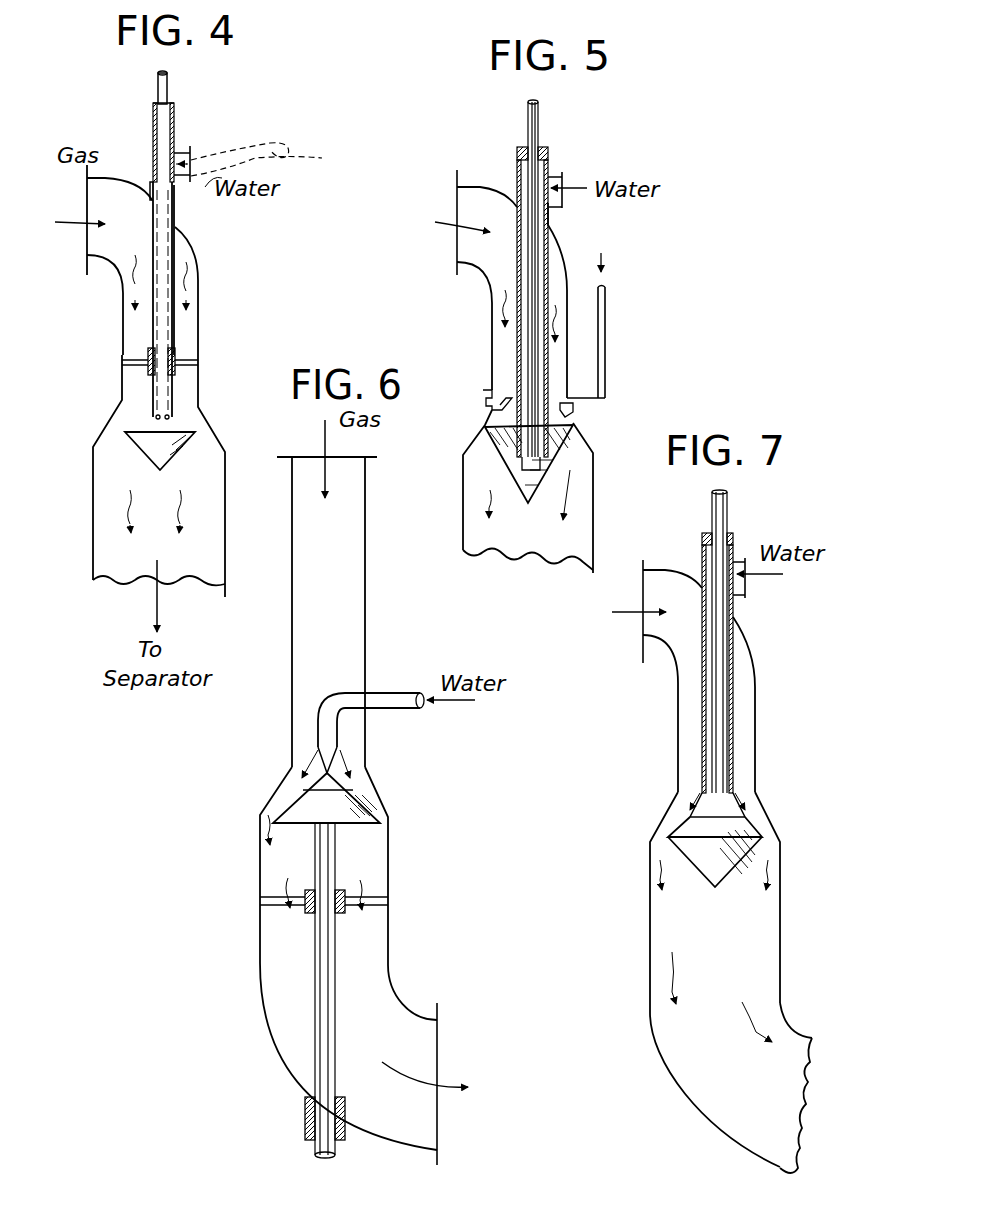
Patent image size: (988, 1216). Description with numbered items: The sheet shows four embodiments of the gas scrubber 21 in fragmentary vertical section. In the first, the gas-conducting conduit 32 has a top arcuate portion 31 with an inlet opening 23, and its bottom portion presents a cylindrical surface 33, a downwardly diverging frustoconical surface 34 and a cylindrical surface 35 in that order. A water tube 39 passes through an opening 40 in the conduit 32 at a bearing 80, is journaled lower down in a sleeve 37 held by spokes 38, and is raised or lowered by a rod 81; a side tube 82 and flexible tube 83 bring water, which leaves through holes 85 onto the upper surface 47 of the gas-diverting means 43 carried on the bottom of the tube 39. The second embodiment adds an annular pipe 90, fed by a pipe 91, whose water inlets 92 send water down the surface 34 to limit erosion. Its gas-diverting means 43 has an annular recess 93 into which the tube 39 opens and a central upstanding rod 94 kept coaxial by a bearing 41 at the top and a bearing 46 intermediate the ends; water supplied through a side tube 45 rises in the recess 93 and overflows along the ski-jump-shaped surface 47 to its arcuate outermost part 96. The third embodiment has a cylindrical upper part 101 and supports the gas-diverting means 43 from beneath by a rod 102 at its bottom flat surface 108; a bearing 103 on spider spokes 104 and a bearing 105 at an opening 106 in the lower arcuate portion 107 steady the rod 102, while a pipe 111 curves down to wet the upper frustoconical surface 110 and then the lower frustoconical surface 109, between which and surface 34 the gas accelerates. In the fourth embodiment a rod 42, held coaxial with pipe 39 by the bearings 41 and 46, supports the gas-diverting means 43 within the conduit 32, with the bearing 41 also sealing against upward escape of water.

In FIG. 4, the scrubber 21 is at (238, 292).
In FIG. 5, the scrubber 21 is at (494, 172).
In FIG. 6, the scrubber 21 is at (373, 622).
In FIG. 7, the scrubber 21 is at (774, 695).
In FIG. 4, the inlet opening 23 is at (87, 245).
In FIG. 5, the inlet opening 23 is at (457, 240).
In FIG. 7, the inlet opening 23 is at (643, 638).
In FIG. 4, the top arcuate portion 31 is at (112, 270).
In FIG. 7, the top arcuate portion 31 is at (665, 655).
In FIG. 4, the gas-conducting conduit 32 is at (125, 178).
In FIG. 7, the gas-conducting conduit 32 is at (678, 573).
In FIG. 4, the cylindrical surface 33 is at (197, 377).
In FIG. 7, the cylindrical surface 33 is at (758, 758).
In FIG. 4, the frustoconical surface 34 is at (207, 432).
In FIG. 6, the frustoconical surface 34 is at (374, 797).
In FIG. 7, the frustoconical surface 34 is at (668, 806).
In FIG. 4, the cylindrical surface 35 is at (95, 517).
In FIG. 5, the cylindrical surface 35 is at (473, 446).
In FIG. 6, the cylindrical surface 35 is at (390, 888).
In FIG. 7, the cylindrical surface 35 is at (786, 922).
In FIG. 4, the sleeve 37 is at (178, 352).
In FIG. 4, the spokes 38 is at (135, 360).
In FIG. 4, the water tube 39 is at (180, 253).
In FIG. 5, the water tube 39 is at (517, 325).
In FIG. 7, the water tube 39 is at (735, 613).
In FIG. 4, the opening 40 is at (152, 196).
In FIG. 5, the bearing 41 is at (540, 150).
In FIG. 7, the bearing 41 is at (702, 537).
In FIG. 5, the rod 42 is at (533, 278).
In FIG. 7, the rod 42 is at (730, 503).
In FIG. 4, the gas-diverting means 43 is at (128, 430).
In FIG. 5, the gas-diverting means 43 is at (497, 460).
In FIG. 6, the gas-diverting means 43 is at (292, 788).
In FIG. 7, the gas-diverting means 43 is at (665, 832).
In FIG. 5, the side tube 45 is at (552, 177).
In FIG. 7, the side tube 45 is at (737, 562).
In FIG. 5, the bearing 46 is at (526, 352).
In FIG. 7, the bearing 46 is at (706, 748).
In FIG. 4, the upper surface 47 is at (126, 434).
In FIG. 5, the upper surface 47 is at (536, 372).
In FIG. 4, the bearing 80 is at (174, 215).
In FIG. 4, the rod 81 is at (170, 82).
In FIG. 4, the side tube 82 is at (178, 152).
In FIG. 4, the flexible tube 83 is at (245, 130).
In FIG. 4, the holes 85 is at (152, 412).
In FIG. 5, the annular pipe 90 is at (486, 394).
In FIG. 5, the pipe 91 is at (608, 322).
In FIG. 5, the water inlets 92 is at (492, 406).
In FIG. 5, the annular recess 93 is at (582, 437).
In FIG. 5, the central upstanding rod 94 is at (522, 470).
In FIG. 5, the outermost part 96 is at (575, 408).
In FIG. 6, the upper part 101 is at (367, 632).
In FIG. 6, the rod 102 is at (337, 1018).
In FIG. 6, the bearing 103 is at (306, 892).
In FIG. 6, the spider spokes 104 is at (368, 898).
In FIG. 6, the bearing 105 is at (306, 1112).
In FIG. 6, the opening 106 is at (345, 1122).
In FIG. 6, the arcuate portion 107 is at (365, 1138).
In FIG. 6, the bottom flat surface 108 is at (343, 826).
In FIG. 6, the frustoconical surface 109 is at (290, 798).
In FIG. 6, the upper frustoconical surface 110 is at (315, 758).
In FIG. 6, the pipe 111 is at (385, 690).